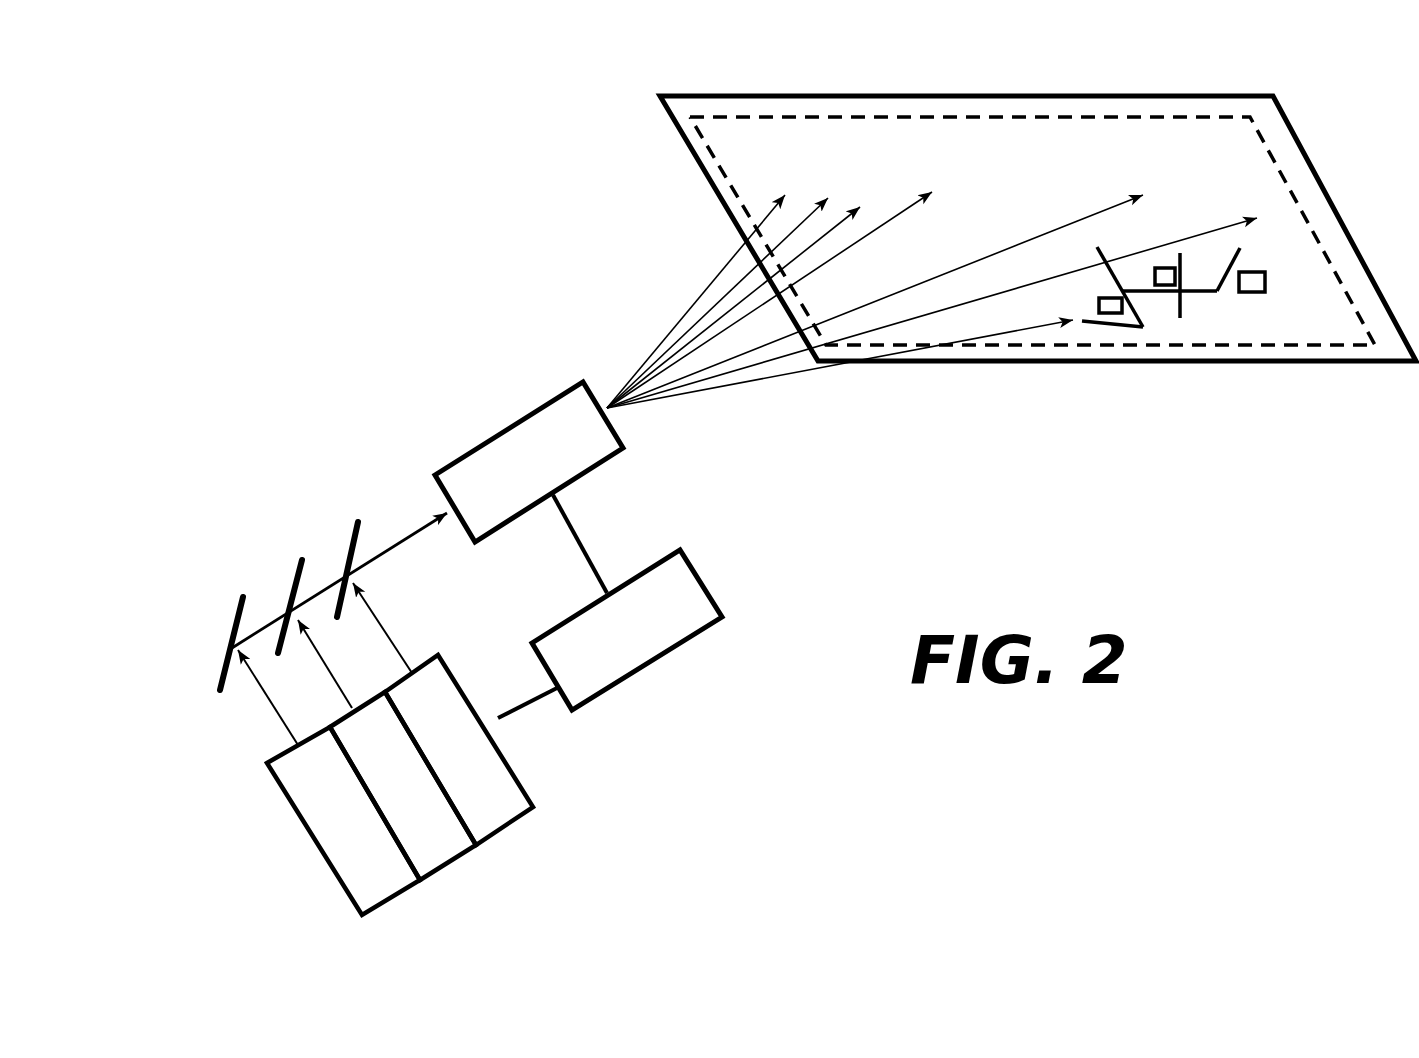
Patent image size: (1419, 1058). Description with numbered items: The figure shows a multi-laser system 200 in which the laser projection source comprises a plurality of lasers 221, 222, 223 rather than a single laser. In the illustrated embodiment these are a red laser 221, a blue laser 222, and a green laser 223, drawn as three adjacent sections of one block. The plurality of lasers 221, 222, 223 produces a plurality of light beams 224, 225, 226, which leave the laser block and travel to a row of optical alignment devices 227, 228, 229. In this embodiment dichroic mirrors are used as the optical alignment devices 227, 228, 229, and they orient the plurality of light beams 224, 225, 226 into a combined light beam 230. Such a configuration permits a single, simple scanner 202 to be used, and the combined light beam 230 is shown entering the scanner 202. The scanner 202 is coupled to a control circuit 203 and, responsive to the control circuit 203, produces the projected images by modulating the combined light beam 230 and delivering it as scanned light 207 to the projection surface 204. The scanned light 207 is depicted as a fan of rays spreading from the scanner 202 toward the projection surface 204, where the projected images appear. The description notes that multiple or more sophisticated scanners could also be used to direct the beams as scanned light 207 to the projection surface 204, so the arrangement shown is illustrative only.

The multi-laser system 200 is at (316, 365).
The scanner 202 is at (542, 448).
The control circuit 203 is at (612, 628).
The projection surface 204 is at (736, 94).
The scanned light 207 is at (716, 303).
The red laser 221 is at (315, 803).
The blue laser 222 is at (422, 830).
The green laser 223 is at (485, 775).
The light beam 224 is at (273, 703).
The light beam 225 is at (336, 682).
The light beam 226 is at (378, 617).
The optical alignment device 227 is at (232, 604).
The optical alignment device 228 is at (297, 556).
The optical alignment device 229 is at (360, 522).
The combined light beam 230 is at (397, 540).